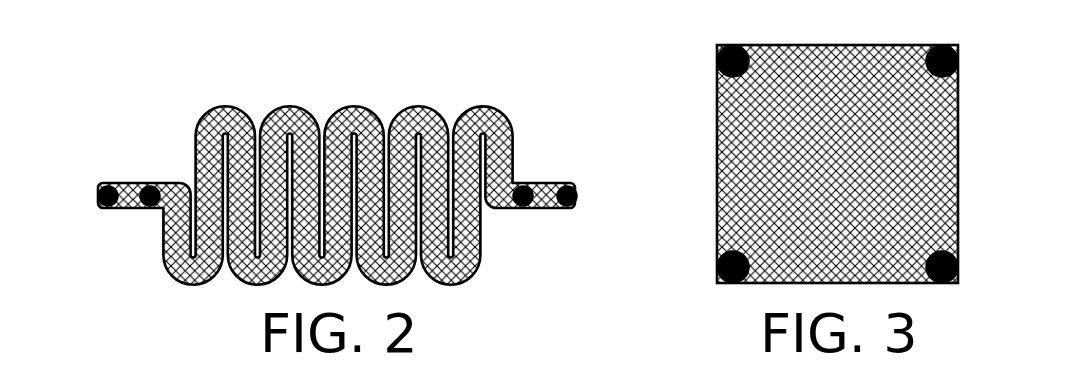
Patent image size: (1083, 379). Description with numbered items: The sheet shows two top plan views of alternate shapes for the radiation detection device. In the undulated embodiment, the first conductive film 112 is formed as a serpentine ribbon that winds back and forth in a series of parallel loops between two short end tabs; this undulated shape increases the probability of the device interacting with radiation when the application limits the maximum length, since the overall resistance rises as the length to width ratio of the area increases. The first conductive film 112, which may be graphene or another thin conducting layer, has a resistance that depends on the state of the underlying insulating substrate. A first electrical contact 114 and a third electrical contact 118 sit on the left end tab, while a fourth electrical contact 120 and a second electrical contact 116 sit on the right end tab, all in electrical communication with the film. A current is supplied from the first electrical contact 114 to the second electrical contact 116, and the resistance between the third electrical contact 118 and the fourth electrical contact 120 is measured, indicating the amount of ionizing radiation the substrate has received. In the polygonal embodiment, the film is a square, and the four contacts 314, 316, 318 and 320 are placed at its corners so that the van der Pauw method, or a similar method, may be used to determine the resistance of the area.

In FIG. 2, the first conductive film 112 is at (353, 122).
In FIG. 3, the first conductive film 112 is at (838, 56).
In FIG. 2, the first electrical contact 114 is at (108, 186).
In FIG. 2, the second electrical contact 116 is at (574, 190).
In FIG. 2, the third electrical contact 118 is at (150, 187).
In FIG. 2, the fourth electrical contact 120 is at (526, 187).
In FIG. 3, the contact 314 is at (736, 46).
In FIG. 3, the contact 316 is at (937, 46).
In FIG. 3, the contact 318 is at (942, 282).
In FIG. 3, the contact 320 is at (733, 282).